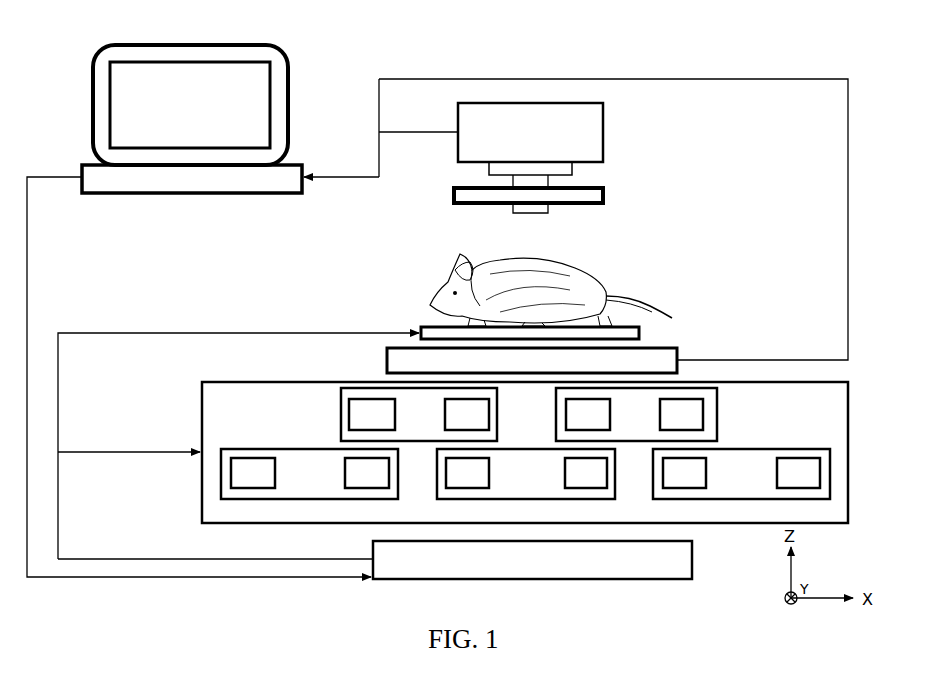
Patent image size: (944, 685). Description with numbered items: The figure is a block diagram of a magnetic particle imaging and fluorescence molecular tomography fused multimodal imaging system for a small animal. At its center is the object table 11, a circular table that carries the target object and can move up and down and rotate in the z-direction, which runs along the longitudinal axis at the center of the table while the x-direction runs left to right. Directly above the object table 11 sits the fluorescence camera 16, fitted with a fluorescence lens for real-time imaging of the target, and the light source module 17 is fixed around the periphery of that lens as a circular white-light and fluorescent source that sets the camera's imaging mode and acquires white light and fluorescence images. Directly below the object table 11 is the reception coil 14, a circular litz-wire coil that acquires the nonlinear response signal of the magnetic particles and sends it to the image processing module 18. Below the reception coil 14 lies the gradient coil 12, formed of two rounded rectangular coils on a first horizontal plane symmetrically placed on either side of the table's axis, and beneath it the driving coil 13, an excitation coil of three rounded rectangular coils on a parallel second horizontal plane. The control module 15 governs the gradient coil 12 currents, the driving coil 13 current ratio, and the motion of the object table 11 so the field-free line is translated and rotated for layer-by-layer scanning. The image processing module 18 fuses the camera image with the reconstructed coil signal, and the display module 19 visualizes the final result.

The object table 11 is at (640, 337).
The gradient coil 12 is at (720, 428).
The driving coil 13 is at (553, 452).
The reception coil 14 is at (385, 368).
The control module 15 is at (695, 568).
The fluorescence camera 16 is at (605, 132).
The light source module 17 is at (605, 195).
The image processing module 18 is at (80, 165).
The display module 19 is at (92, 103).